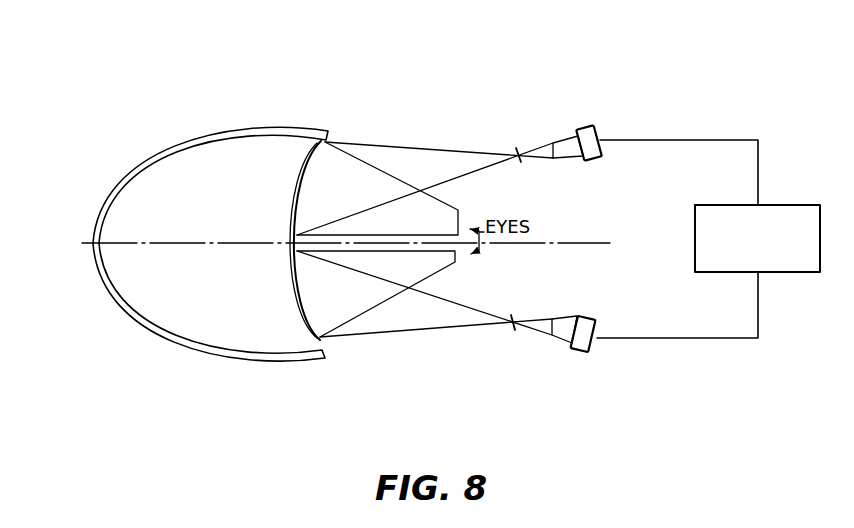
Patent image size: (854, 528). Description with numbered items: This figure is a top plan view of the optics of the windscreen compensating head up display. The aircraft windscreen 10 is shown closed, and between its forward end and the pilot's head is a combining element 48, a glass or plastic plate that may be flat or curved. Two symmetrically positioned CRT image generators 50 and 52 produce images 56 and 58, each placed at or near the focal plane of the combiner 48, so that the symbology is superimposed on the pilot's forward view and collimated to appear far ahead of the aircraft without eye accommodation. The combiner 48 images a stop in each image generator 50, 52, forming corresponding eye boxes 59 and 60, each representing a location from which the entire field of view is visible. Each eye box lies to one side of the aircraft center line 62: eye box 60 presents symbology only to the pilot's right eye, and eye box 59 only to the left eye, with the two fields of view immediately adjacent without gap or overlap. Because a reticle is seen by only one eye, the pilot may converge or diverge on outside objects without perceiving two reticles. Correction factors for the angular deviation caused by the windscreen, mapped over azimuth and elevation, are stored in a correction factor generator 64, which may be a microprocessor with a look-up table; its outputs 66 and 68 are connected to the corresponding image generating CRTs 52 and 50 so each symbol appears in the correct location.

The windscreen 10 is at (216, 127).
The combining element 48 is at (293, 175).
The CRT image generator 50 is at (602, 329).
The CRT image generator 52 is at (604, 123).
The image 56 is at (515, 322).
The image 58 is at (520, 158).
The eye box 59 is at (455, 259).
The eye box 60 is at (457, 215).
The aircraft center line 62 is at (572, 240).
The correction factor generator 64 is at (701, 273).
The output 66 is at (718, 137).
The output 68 is at (712, 341).